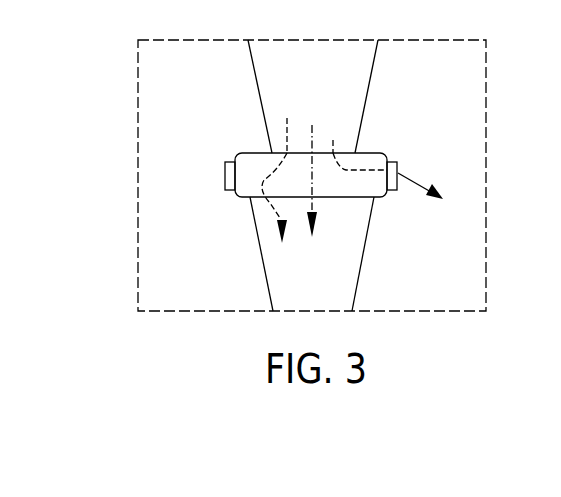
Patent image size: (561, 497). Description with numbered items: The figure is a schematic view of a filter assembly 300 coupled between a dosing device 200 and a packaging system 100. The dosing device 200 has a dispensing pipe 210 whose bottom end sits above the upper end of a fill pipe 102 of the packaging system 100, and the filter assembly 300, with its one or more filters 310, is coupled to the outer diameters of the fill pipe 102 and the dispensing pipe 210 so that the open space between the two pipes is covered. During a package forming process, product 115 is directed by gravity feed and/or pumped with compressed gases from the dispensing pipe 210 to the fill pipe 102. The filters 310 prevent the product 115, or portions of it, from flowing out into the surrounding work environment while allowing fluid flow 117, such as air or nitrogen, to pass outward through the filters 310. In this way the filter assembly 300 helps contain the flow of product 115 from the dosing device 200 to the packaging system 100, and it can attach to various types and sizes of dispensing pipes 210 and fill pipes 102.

The packaging system 100 is at (425, 228).
The fill pipe 102 is at (258, 236).
The product 115 is at (288, 150).
The fluid flow 117 is at (400, 178).
The dosing device 200 is at (328, 79).
The dispensing pipe 210 is at (256, 80).
The filter assembly 300 is at (394, 127).
The filter 310 is at (225, 175).